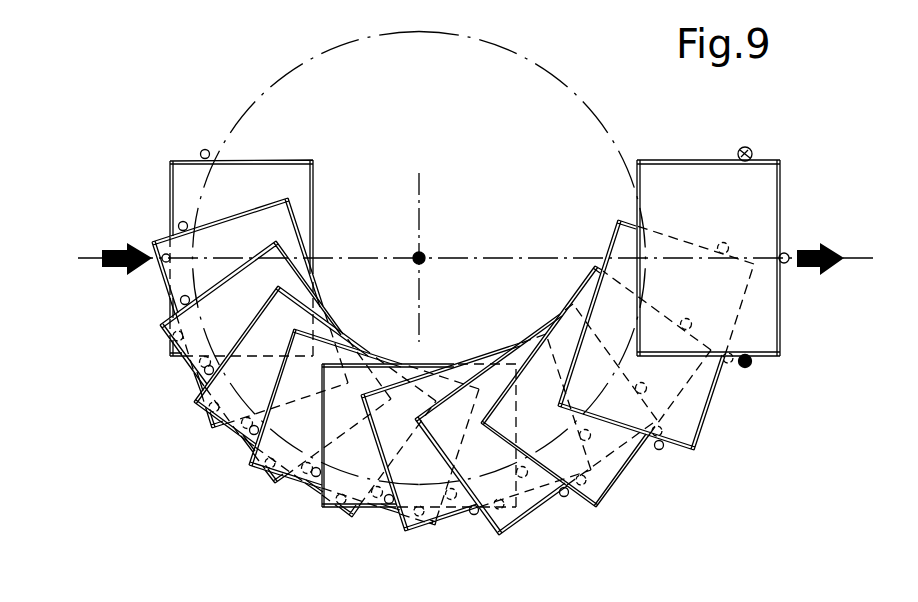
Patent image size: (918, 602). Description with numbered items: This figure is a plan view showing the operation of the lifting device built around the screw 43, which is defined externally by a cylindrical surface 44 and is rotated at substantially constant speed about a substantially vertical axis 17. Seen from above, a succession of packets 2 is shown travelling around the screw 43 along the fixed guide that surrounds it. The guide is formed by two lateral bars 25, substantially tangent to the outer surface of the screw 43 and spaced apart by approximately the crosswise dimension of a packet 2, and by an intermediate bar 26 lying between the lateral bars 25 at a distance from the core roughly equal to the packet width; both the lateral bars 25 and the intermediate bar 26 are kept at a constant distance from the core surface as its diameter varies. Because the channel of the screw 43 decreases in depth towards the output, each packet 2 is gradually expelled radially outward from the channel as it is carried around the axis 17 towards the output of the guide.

The packet 2 is at (297, 430).
The vertical axis 17 is at (424, 253).
The lateral bars 25 is at (742, 147).
The intermediate bar 26 is at (788, 263).
The screw 43 is at (270, 80).
The cylindrical surface 44 is at (580, 84).